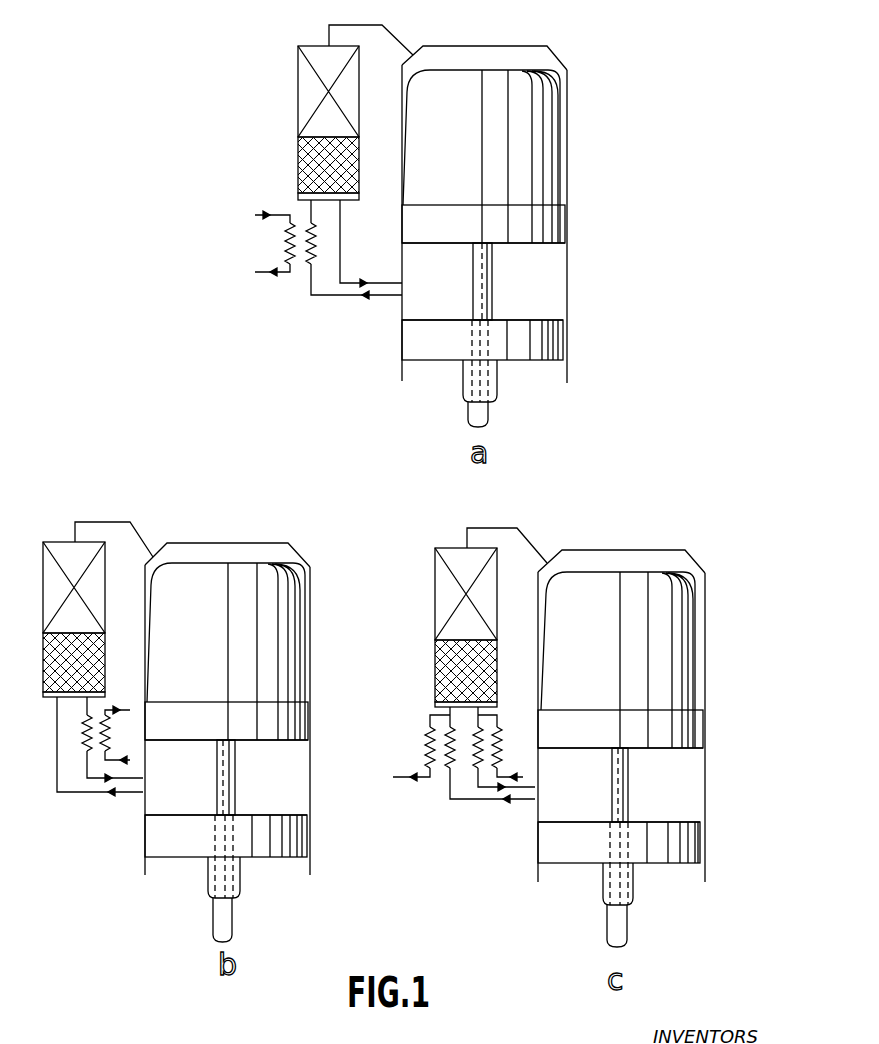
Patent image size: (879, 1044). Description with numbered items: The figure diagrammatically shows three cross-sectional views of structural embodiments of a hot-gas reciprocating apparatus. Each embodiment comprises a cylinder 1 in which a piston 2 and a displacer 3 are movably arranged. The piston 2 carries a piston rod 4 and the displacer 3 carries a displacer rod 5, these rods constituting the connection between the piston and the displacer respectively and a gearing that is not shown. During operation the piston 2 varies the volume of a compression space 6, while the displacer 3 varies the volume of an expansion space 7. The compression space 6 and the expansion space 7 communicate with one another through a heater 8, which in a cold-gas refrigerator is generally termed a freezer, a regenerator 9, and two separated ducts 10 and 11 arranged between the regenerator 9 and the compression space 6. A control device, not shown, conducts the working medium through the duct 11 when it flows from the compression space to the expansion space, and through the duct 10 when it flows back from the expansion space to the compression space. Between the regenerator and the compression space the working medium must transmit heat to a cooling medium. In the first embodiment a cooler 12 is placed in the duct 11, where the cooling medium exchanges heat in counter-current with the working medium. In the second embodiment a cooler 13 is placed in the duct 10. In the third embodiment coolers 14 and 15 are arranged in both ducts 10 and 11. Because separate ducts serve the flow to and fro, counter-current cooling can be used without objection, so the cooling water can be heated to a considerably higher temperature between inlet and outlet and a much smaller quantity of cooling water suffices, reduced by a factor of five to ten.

The cylinder 1 is at (567, 263).
The piston 2 is at (540, 338).
The displacer 3 is at (535, 147).
The piston rod 4 is at (497, 380).
The displacer rod 5 is at (483, 288).
The compression space 6 is at (537, 305).
The expansion space 7 is at (520, 58).
The heater 8 is at (310, 83).
The regenerator 9 is at (310, 165).
The duct 10 is at (357, 281).
The duct 11 is at (333, 296).
The cooler 12 is at (286, 240).
The cooler 13 is at (112, 728).
The cooler 14 is at (500, 745).
The cooler 15 is at (425, 740).